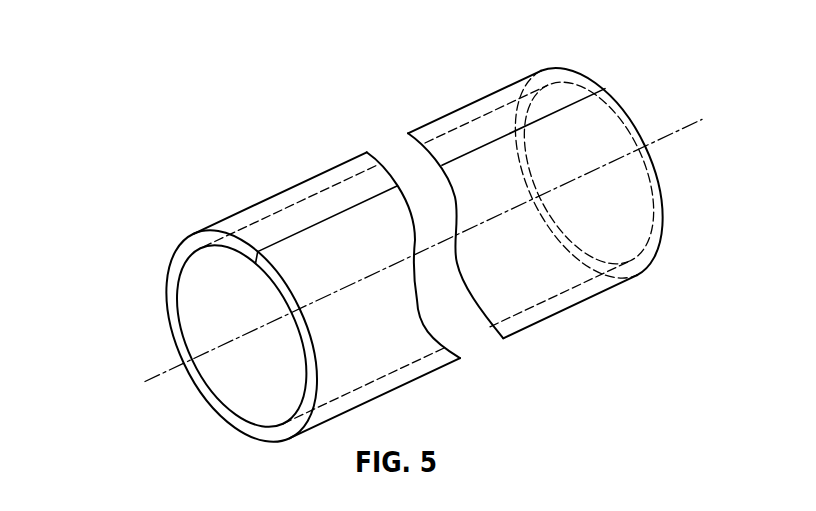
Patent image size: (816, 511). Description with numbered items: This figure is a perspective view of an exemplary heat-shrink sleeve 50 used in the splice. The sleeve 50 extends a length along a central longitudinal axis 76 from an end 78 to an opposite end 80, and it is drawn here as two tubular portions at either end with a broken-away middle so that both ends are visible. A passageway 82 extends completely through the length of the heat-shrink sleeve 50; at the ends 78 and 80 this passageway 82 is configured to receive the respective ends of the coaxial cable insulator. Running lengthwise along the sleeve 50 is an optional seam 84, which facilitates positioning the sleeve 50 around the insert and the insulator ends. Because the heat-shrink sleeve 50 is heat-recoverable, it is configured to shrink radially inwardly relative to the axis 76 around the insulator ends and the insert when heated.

The heat-shrink sleeve 50 is at (160, 90).
The central longitudinal axis 76 is at (158, 374).
The end 78 is at (190, 228).
The opposite end 80 is at (537, 63).
The passageway 82 is at (197, 297).
The seam 84 is at (322, 220).